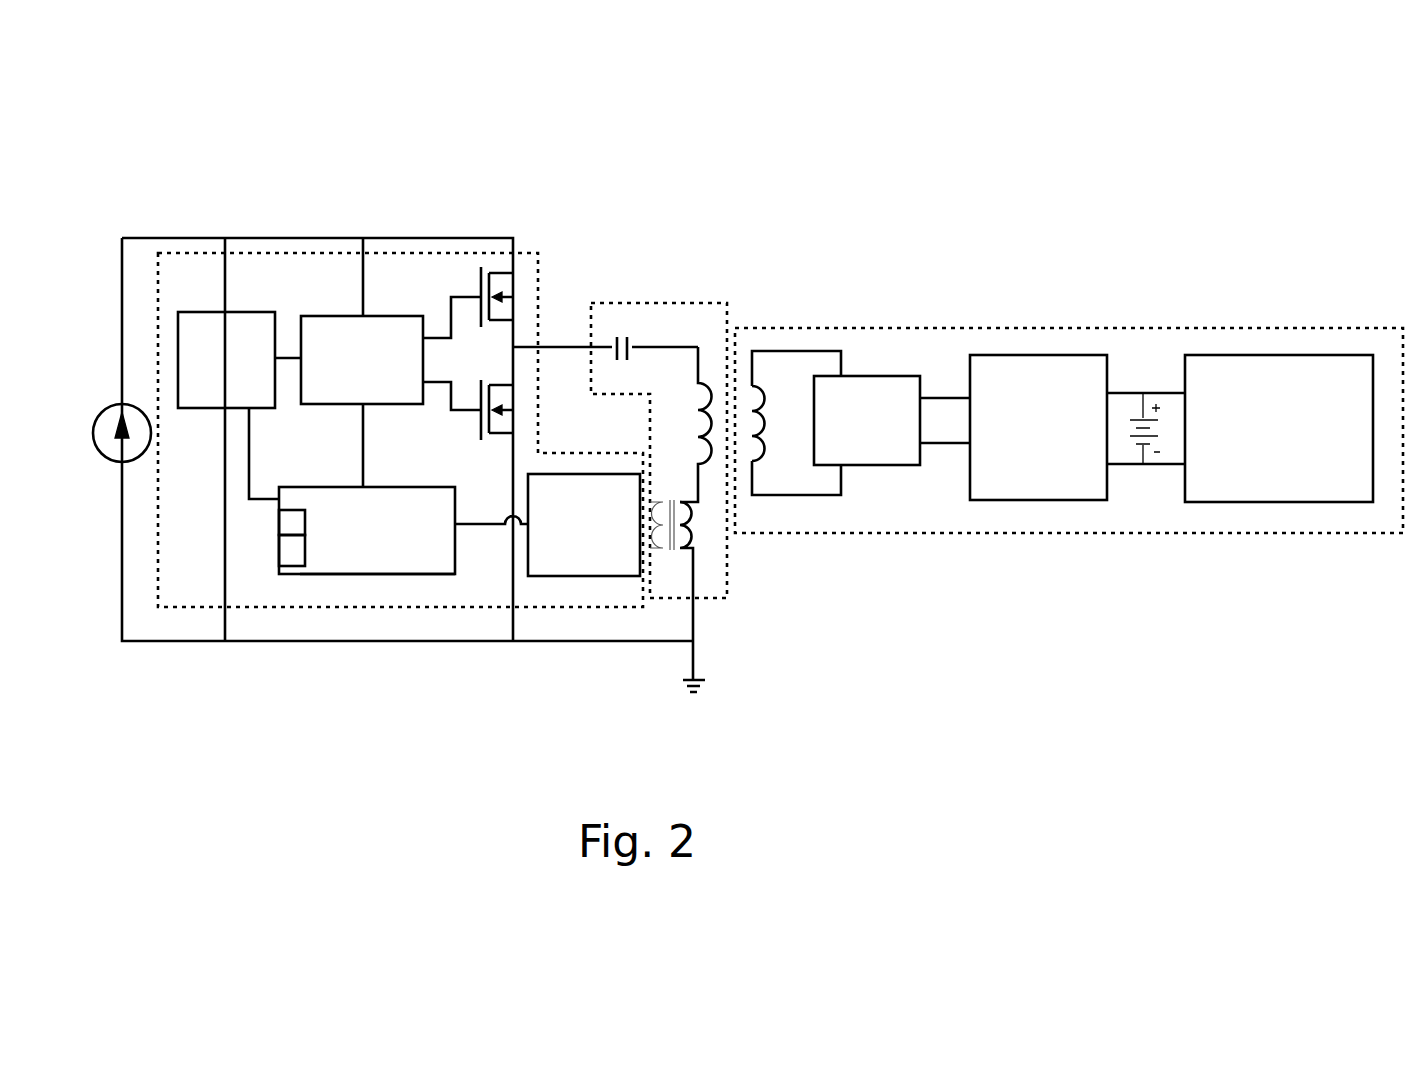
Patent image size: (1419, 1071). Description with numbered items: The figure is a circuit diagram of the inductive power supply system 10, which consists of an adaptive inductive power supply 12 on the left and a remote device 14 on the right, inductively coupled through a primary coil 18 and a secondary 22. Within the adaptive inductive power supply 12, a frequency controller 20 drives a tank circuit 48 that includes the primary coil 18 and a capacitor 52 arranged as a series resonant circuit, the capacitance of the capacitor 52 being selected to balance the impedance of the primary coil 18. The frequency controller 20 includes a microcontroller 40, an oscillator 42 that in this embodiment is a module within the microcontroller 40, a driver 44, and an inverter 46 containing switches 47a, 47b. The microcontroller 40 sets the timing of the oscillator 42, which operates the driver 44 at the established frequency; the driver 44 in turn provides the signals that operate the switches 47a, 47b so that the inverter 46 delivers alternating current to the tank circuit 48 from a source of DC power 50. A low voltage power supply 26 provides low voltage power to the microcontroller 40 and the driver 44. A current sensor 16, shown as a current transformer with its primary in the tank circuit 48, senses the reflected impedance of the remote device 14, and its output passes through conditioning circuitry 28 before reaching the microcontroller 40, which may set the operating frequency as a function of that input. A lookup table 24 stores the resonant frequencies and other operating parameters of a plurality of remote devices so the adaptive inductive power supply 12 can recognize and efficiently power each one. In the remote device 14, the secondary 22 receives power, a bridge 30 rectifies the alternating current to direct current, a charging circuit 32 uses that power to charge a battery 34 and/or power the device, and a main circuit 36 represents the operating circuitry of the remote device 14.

The inductive power supply system 10 is at (760, 166).
The adaptive inductive power supply 12 is at (450, 253).
The remote device 14 is at (1143, 328).
The current sensor 16 is at (668, 548).
The primary coil 18 is at (700, 466).
The frequency controller 20 is at (176, 607).
The secondary 22 is at (752, 461).
The lookup table 24 is at (278, 574).
The low voltage power supply 26 is at (200, 312).
The conditioning circuitry 28 is at (528, 543).
The bridge 30 is at (892, 376).
The charging circuit 32 is at (1068, 355).
The battery 34 is at (1128, 450).
The main circuit 36 is at (1243, 355).
The microcontroller 40 is at (397, 575).
The oscillator 42 is at (279, 522).
The driver 44 is at (363, 316).
The inverter 46 is at (523, 333).
The switch 47a is at (518, 268).
The switch 47b is at (515, 410).
The tank circuit 48 is at (700, 303).
The source of DC power 50 is at (95, 452).
The capacitor 52 is at (612, 318).